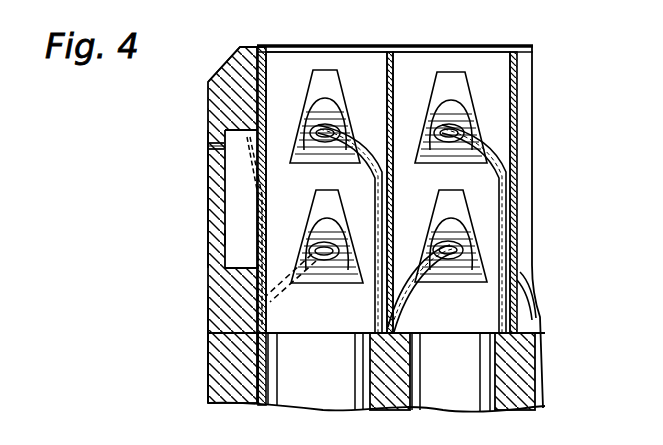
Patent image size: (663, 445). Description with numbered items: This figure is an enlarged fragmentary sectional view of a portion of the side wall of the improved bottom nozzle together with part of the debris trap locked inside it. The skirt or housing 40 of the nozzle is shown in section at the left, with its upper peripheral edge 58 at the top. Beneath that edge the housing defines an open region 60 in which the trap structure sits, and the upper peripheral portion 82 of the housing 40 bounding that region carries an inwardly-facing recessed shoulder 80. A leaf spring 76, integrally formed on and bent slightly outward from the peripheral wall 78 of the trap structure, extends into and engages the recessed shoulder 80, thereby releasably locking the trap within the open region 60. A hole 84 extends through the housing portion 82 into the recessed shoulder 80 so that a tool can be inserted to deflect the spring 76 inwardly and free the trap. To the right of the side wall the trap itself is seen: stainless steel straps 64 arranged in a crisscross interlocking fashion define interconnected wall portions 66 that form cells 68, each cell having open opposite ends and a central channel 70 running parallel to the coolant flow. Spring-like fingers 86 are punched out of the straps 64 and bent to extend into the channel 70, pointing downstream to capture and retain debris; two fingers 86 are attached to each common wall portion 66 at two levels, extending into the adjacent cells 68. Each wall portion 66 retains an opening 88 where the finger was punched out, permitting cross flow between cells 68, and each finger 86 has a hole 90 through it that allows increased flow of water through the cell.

The housing 40 is at (207, 278).
The upper peripheral edge 58 is at (252, 46).
The open region 60 is at (255, 313).
The straps 64 is at (335, 45).
The wall portions 66 is at (290, 60).
The cells 68 is at (420, 63).
The central channel 70 is at (380, 45).
The leaf springs 76 is at (248, 180).
The peripheral wall 78 is at (268, 53).
The recessed shoulders 80 is at (228, 237).
The upper peripheral portion 82 is at (207, 213).
The hole 84 is at (207, 152).
The fingers 86 is at (347, 113).
The opening 88 is at (316, 83).
The hole 90 is at (328, 141).